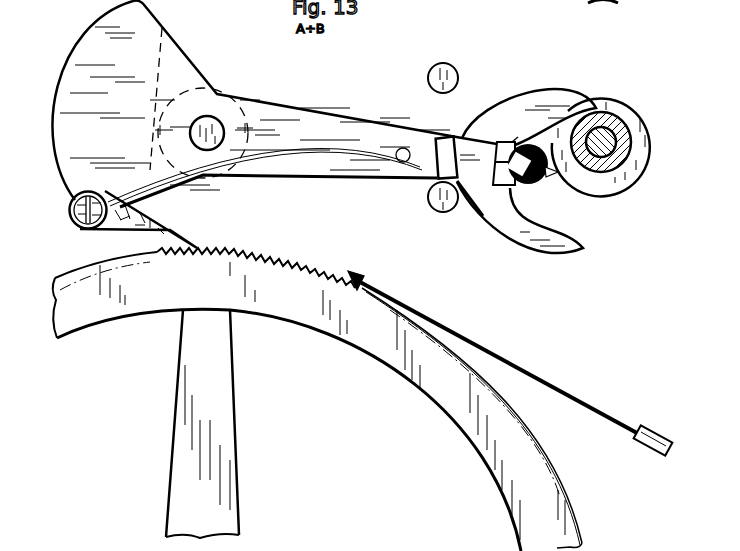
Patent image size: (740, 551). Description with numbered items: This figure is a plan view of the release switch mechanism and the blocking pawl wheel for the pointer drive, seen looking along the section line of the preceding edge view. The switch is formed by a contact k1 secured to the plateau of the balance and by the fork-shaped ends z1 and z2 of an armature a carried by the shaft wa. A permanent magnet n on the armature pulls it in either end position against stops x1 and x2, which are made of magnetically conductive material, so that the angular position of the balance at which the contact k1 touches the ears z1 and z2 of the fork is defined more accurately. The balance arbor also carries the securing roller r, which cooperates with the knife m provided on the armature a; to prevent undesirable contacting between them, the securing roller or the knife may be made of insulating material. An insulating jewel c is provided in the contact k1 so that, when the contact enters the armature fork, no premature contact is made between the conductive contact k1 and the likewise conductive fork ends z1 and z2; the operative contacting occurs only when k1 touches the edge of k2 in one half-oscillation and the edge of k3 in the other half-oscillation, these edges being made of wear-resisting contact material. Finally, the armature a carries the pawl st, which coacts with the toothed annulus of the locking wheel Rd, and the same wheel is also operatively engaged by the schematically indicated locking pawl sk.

The armature a is at (288, 118).
The shaft wa is at (213, 118).
The pawl st is at (168, 227).
The stop x1 is at (431, 203).
The stop x2 is at (431, 89).
The magnet n is at (440, 138).
The fork end z1 is at (525, 106).
The securing roller r is at (641, 128).
The insulating jewel c is at (513, 176).
The edge k2 is at (515, 142).
The contact k1 is at (534, 186).
The knife m is at (553, 180).
The edge k3 is at (513, 172).
The fork end z2 is at (534, 240).
The locking wheel Rd is at (293, 262).
The locking pawl sk is at (355, 272).